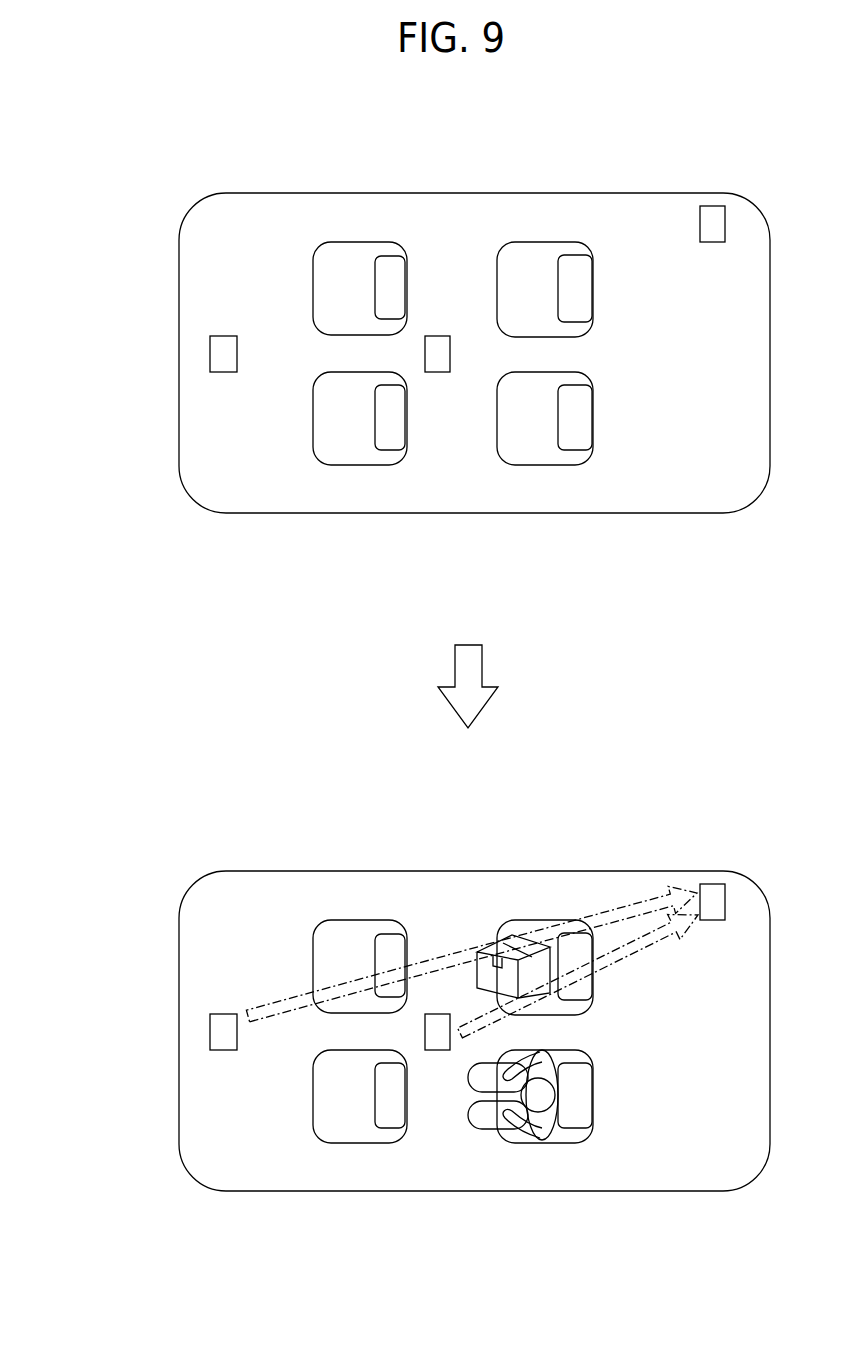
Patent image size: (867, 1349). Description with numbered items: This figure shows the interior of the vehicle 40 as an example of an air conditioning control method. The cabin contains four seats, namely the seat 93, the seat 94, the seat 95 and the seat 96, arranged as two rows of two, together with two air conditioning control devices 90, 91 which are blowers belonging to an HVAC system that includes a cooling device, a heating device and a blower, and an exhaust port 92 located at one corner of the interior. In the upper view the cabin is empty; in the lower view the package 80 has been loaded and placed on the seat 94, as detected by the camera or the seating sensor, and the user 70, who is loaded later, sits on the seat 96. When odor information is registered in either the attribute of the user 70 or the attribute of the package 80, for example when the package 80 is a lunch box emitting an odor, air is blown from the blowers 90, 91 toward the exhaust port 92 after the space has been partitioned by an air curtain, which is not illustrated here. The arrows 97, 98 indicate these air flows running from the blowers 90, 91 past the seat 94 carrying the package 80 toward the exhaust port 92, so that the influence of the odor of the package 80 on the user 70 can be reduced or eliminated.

The vehicle 40 is at (179, 351).
The user 70 is at (539, 1100).
The package 80 is at (493, 943).
The air conditioning control device 90 is at (221, 336).
The air conditioning control device 91 is at (436, 336).
The exhaust port 92 is at (713, 206).
The seat 93 is at (355, 242).
The seat 94 is at (538, 242).
The seat 95 is at (355, 465).
The seat 96 is at (537, 465).
The detection direction 97 is at (622, 905).
The detection direction 98 is at (640, 953).